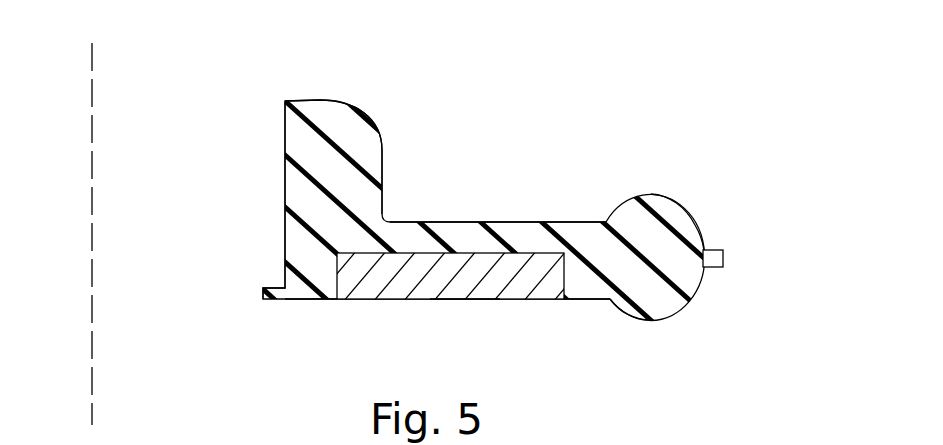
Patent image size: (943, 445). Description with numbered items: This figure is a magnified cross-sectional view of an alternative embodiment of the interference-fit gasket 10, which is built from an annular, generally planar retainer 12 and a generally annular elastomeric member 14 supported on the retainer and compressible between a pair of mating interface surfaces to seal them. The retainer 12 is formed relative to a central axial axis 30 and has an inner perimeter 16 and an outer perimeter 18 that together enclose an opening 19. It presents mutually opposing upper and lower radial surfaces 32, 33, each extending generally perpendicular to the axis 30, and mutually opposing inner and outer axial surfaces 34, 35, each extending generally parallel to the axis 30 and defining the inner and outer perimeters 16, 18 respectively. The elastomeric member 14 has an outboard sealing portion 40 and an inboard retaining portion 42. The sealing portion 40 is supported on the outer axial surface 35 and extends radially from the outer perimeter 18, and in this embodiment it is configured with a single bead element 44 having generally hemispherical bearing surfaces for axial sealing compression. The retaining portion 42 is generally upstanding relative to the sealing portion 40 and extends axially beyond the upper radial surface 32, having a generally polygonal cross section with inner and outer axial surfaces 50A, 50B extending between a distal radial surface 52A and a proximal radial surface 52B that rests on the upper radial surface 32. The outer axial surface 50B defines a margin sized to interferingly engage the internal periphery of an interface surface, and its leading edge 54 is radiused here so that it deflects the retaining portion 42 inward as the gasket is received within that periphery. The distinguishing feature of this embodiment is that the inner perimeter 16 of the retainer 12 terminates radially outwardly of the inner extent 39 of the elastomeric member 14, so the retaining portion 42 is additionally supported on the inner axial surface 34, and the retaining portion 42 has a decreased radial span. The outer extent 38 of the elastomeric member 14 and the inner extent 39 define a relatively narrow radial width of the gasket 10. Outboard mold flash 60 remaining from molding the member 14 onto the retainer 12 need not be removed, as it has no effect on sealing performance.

The interference-fit gasket 10 is at (666, 93).
The retainer 12 is at (386, 300).
The elastomeric member 14 is at (700, 215).
The inner perimeter 16 is at (337, 253).
The outer perimeter 18 is at (566, 262).
The opening 19 is at (48, 243).
The central axis 30 is at (92, 76).
The upper radial surface 32 is at (508, 222).
The lower radial surface 33 is at (463, 300).
The inner axial surface 34 is at (337, 278).
The outer axial surface 35 is at (566, 286).
The outer extent 38 is at (704, 242).
The inner extent 39 is at (286, 275).
The sealing portion 40 is at (579, 222).
The retaining portion 42 is at (383, 148).
The bead element 44 is at (676, 198).
The inner axial surface of retaining portion 50A is at (285, 152).
The outer axial surface of retaining portion 50B is at (383, 170).
The distal radial surface 52A is at (305, 100).
The proximal radial surface 52B is at (412, 222).
The leading edge 54 is at (349, 101).
The mold flash 60 is at (726, 259).